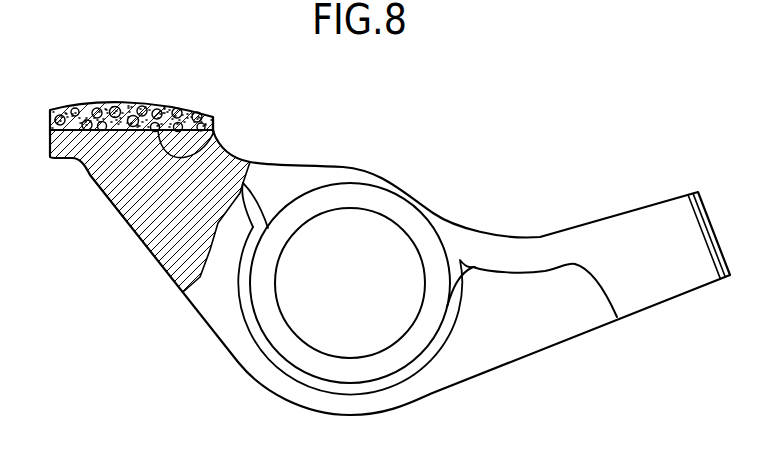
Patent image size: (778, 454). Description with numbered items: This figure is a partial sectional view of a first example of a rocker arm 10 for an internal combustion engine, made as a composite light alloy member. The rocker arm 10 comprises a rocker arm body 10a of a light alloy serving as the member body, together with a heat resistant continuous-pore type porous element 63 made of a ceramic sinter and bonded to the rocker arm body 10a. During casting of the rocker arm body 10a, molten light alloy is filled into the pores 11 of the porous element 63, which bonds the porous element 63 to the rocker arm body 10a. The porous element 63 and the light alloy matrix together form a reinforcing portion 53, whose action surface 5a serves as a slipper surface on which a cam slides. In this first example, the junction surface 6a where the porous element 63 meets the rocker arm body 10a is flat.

The rocker arm 10 is at (390, 272).
The rocker arm body 10a is at (245, 200).
The action surface 5a is at (128, 94).
The reinforcing portion 53 is at (146, 88).
The pores 11 is at (130, 128).
The porous element 63 is at (223, 97).
The junction surface 6a is at (209, 135).